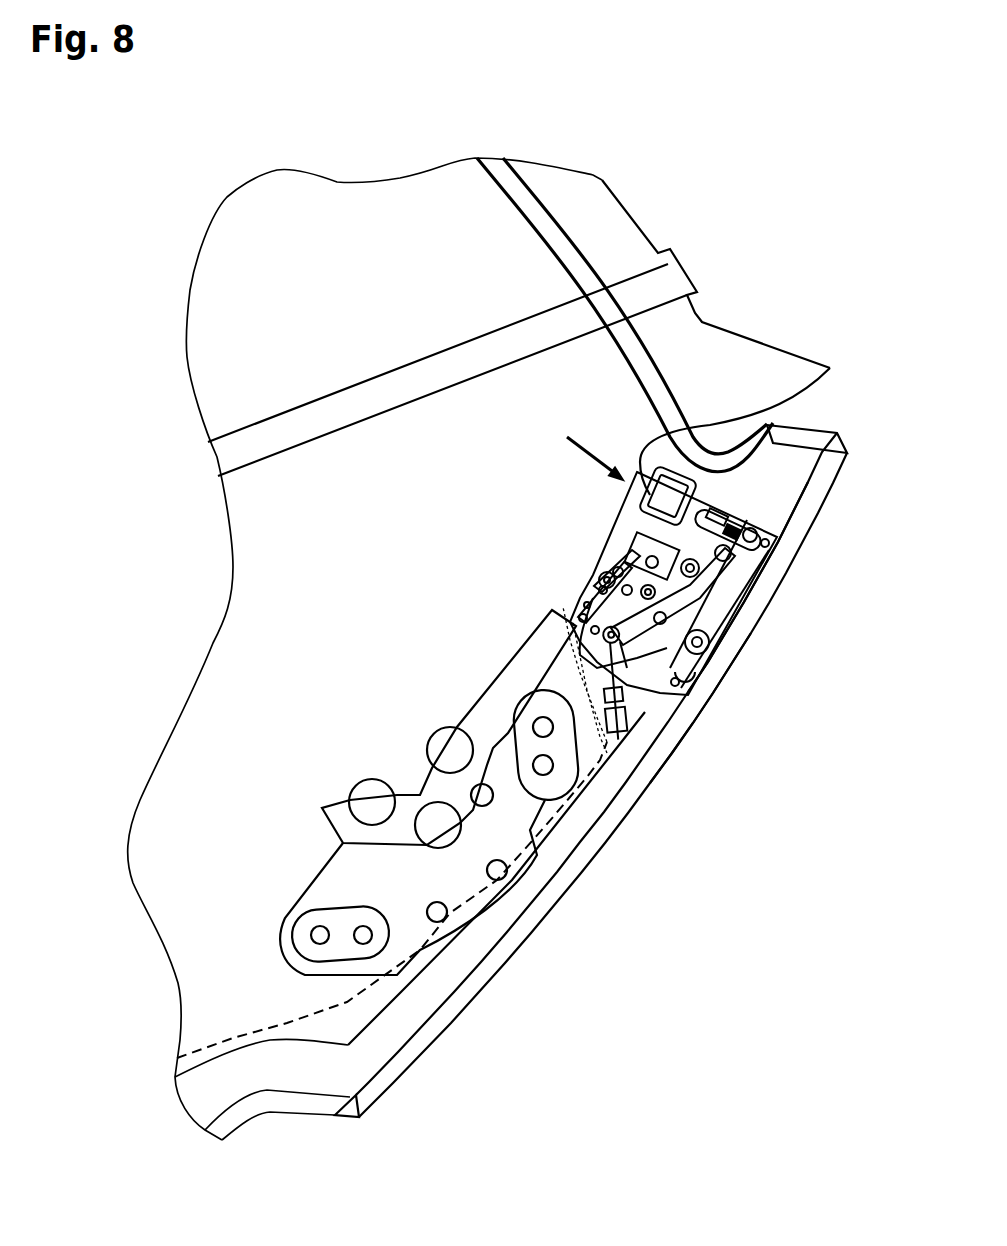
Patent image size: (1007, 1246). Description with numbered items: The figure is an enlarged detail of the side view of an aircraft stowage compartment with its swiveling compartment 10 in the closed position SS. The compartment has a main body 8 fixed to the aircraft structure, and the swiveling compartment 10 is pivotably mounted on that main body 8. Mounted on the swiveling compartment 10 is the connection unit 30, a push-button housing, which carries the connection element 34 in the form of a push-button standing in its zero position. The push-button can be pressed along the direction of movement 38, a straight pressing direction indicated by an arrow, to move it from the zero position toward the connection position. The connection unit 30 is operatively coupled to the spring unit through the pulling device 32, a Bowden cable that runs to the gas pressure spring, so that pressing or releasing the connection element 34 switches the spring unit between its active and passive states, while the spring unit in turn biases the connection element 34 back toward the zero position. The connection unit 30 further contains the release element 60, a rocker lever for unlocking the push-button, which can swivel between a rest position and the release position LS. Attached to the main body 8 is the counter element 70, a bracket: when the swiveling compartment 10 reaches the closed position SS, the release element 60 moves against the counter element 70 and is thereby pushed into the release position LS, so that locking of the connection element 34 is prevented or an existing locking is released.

The main body 8 is at (630, 217).
The swiveling compartment 10 is at (823, 506).
The connection unit 30 is at (760, 620).
The pulling device 32 is at (689, 727).
The connection element 34 is at (768, 500).
The direction of movement 38 is at (592, 452).
The release element 60 is at (613, 662).
The counter element 70 is at (513, 654).
The release position LS is at (515, 585).
The closed position SS is at (792, 915).